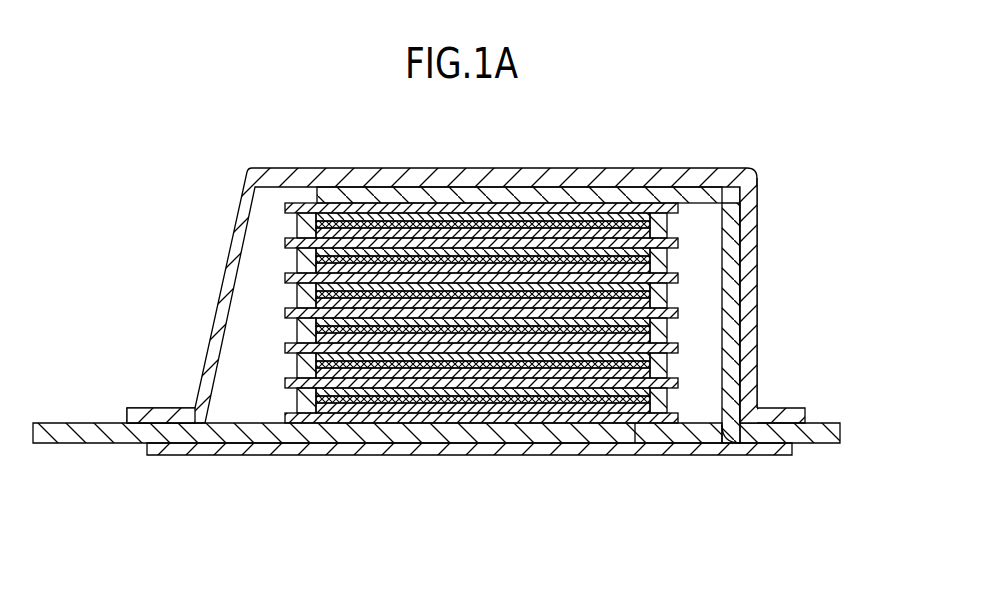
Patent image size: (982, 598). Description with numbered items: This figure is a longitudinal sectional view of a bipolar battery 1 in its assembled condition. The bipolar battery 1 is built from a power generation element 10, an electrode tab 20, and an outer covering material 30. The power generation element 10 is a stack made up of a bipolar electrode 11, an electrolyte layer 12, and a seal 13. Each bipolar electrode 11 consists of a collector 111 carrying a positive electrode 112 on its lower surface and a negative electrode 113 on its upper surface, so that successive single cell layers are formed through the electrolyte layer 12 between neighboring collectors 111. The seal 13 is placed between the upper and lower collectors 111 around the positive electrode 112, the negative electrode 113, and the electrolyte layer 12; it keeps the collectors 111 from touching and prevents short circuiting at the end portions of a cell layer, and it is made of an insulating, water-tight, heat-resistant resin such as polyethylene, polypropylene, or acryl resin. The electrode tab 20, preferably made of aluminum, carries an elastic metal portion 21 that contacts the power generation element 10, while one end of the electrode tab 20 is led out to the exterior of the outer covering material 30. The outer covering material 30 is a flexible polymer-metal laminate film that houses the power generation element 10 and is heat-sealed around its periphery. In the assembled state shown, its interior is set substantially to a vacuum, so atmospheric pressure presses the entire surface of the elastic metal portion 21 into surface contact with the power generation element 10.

The bipolar battery 1 is at (841, 157).
The power generation element 10 is at (542, 314).
The bipolar electrode 11 is at (576, 313).
The collector 111 is at (660, 277).
The positive electrode 112 is at (650, 290).
The negative electrode 113 is at (653, 256).
The electrolyte layer 12 is at (660, 335).
The seal 13 is at (645, 287).
The electrode tab 20 is at (65, 430).
The elastic metal portion 21 is at (722, 203).
The outer covering material 30 is at (268, 168).